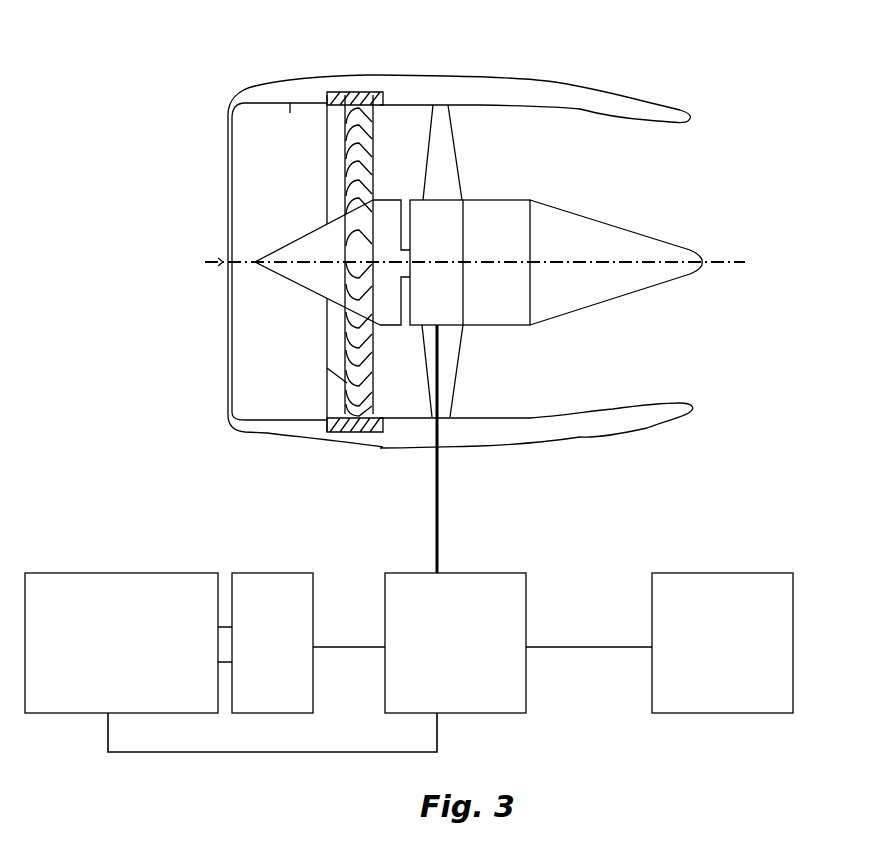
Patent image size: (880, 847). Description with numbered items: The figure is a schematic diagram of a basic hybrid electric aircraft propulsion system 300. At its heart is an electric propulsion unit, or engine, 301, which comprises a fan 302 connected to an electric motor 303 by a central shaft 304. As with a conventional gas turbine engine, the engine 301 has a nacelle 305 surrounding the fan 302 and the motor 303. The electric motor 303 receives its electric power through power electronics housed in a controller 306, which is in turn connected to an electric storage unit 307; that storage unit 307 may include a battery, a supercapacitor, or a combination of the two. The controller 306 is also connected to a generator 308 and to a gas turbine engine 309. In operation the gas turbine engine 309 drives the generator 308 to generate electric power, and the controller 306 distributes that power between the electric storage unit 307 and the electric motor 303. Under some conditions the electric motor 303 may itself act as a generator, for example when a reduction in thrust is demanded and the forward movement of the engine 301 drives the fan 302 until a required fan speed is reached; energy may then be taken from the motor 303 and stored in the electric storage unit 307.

The hybrid electric aircraft propulsion system 300 is at (437, 381).
The electric propulsion unit 301 is at (423, 251).
The fan 302 is at (343, 193).
The electric motor 303 is at (450, 215).
The central shaft 304 is at (403, 268).
The nacelle 305 is at (558, 83).
The controller 306 is at (497, 572).
The electric storage unit 307 is at (757, 572).
The generator 308 is at (290, 572).
The gas turbine engine 309 is at (138, 572).